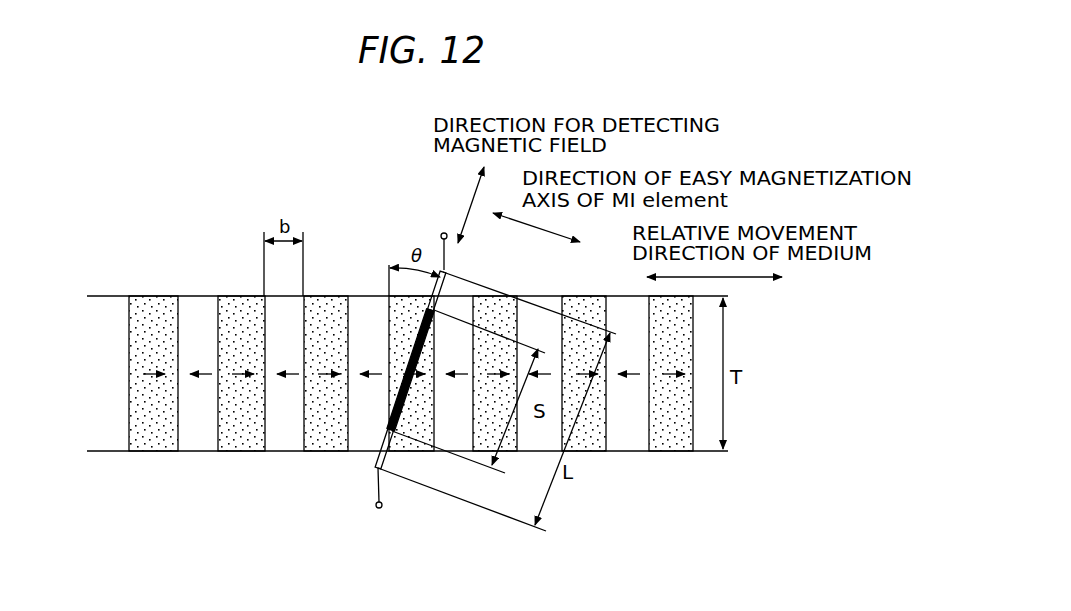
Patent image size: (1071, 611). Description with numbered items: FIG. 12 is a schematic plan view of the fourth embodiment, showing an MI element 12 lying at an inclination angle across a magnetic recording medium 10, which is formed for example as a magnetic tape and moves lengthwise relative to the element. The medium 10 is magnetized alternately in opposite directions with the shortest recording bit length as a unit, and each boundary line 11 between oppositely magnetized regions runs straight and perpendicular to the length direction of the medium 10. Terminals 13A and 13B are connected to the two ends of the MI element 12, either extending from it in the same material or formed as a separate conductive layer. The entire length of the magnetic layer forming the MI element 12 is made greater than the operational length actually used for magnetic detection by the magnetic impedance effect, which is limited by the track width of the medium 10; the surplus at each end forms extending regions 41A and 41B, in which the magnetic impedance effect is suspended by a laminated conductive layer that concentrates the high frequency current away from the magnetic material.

The magnetic recording medium 10 is at (150, 307).
The boundary line 11 is at (218, 408).
The MI element 12 is at (418, 364).
The terminal 13A is at (442, 233).
The terminal 13B is at (377, 509).
The extending region 41A is at (447, 287).
The extending region 41B is at (378, 455).